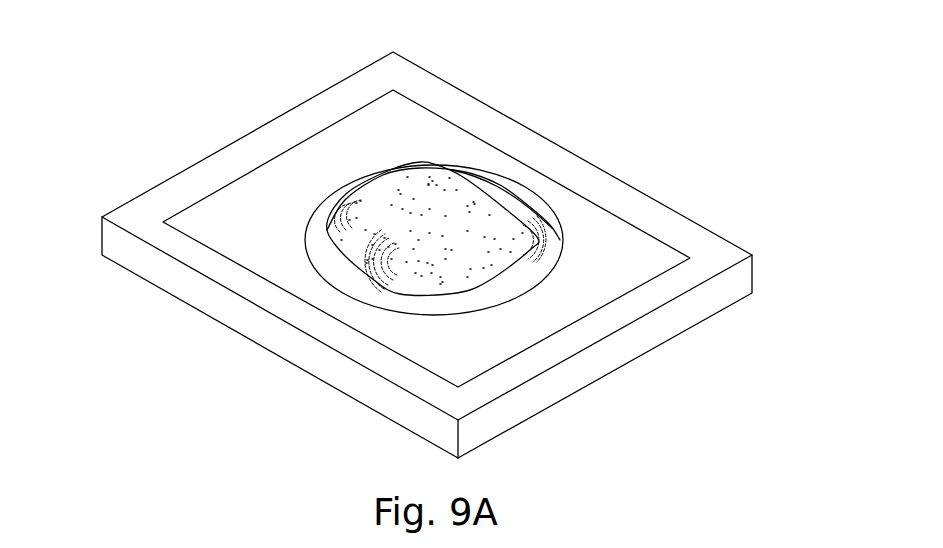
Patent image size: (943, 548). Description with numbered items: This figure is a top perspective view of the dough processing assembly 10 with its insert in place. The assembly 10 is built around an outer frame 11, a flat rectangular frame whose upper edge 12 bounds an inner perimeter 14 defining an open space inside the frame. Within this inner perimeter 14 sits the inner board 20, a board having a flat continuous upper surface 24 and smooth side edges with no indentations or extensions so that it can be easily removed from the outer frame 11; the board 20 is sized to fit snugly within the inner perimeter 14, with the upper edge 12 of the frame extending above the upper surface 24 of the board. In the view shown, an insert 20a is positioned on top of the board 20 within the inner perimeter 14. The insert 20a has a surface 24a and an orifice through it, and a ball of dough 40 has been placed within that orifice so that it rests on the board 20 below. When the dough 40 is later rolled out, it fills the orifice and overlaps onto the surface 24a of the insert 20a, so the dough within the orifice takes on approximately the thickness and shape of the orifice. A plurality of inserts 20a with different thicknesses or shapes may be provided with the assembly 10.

The dough processing assembly 10 is at (145, 92).
The outer frame 11 is at (667, 205).
The upper edge 12 is at (523, 147).
The inner perimeter 14 is at (580, 193).
The inner board 20 is at (325, 258).
The insert 20a is at (643, 255).
The upper surface 24 is at (360, 285).
The surface 24a is at (575, 300).
The dough 40 is at (423, 183).